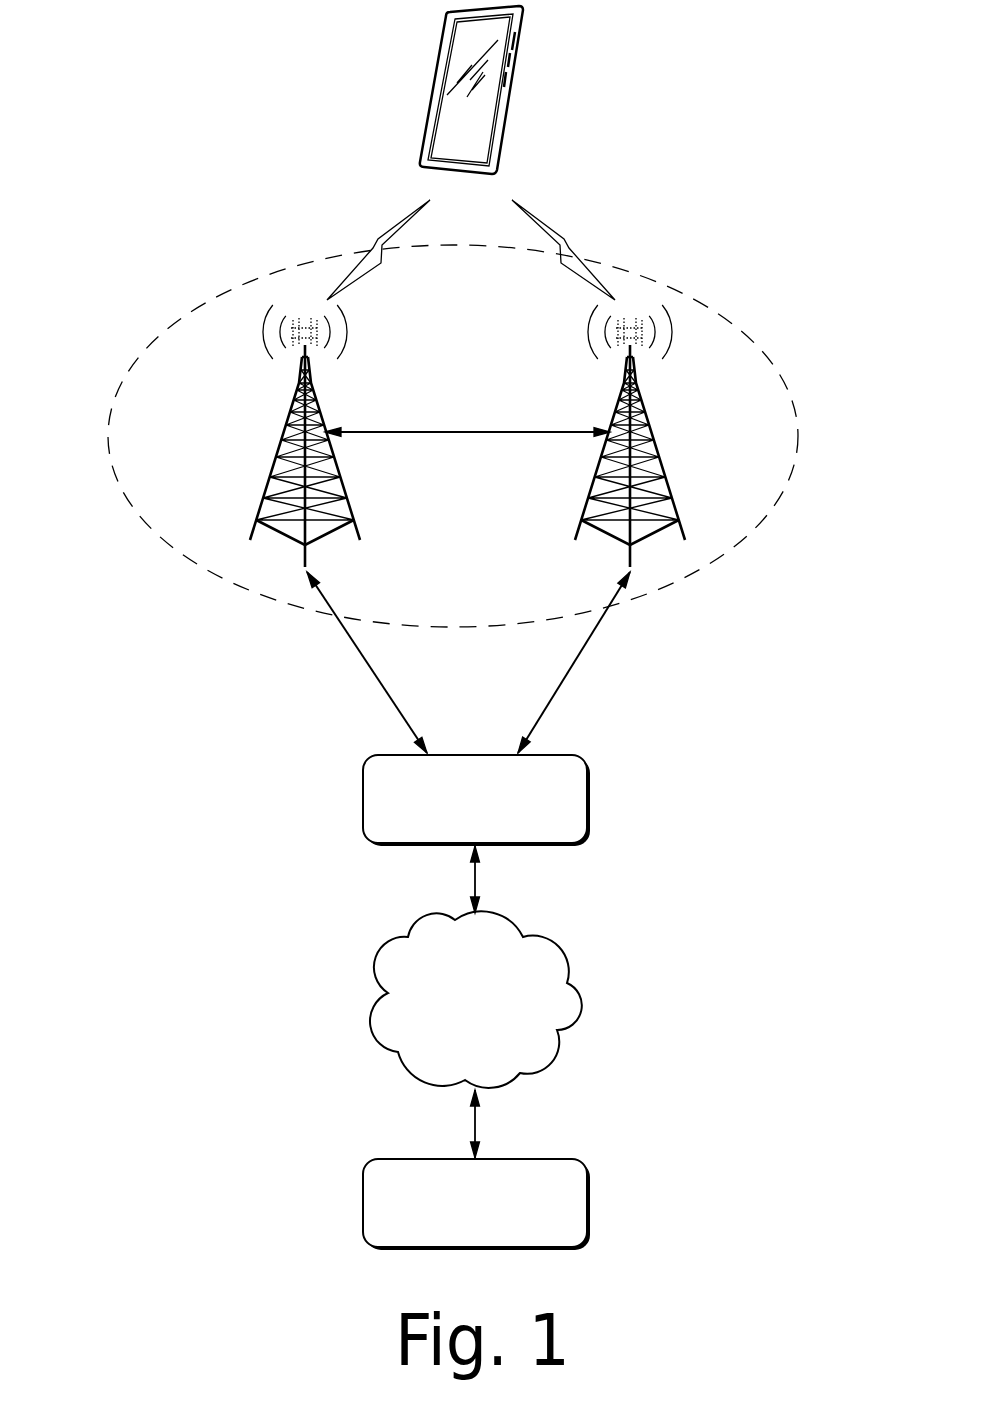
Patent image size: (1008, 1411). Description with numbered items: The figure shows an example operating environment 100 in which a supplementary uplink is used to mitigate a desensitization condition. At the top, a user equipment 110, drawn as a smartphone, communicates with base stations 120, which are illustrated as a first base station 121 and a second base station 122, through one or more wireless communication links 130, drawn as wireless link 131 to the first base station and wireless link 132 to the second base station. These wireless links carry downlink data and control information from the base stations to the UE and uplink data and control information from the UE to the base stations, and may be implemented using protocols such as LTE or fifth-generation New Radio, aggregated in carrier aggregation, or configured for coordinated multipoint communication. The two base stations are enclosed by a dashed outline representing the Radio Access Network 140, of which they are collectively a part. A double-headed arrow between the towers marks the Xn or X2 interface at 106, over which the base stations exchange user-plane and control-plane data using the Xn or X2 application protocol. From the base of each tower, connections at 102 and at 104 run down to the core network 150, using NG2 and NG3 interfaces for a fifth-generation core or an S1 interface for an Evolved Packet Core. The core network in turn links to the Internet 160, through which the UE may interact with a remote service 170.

The environment 100 is at (166, 72).
The user equipment 110 is at (510, 85).
The base stations 120 is at (468, 424).
The base station 121 is at (290, 408).
The base station 122 is at (647, 408).
The wireless communication links 130 is at (471, 219).
The wireless link 131 is at (383, 227).
The wireless link 132 is at (560, 225).
The Radio Access Network 140 is at (775, 353).
The Xn interface connection 106 is at (430, 427).
The connection to core network 102 is at (365, 667).
The connection to core network 104 is at (577, 667).
The core network 150 is at (476, 800).
The Internet 160 is at (476, 999).
The remote service 170 is at (476, 1204).